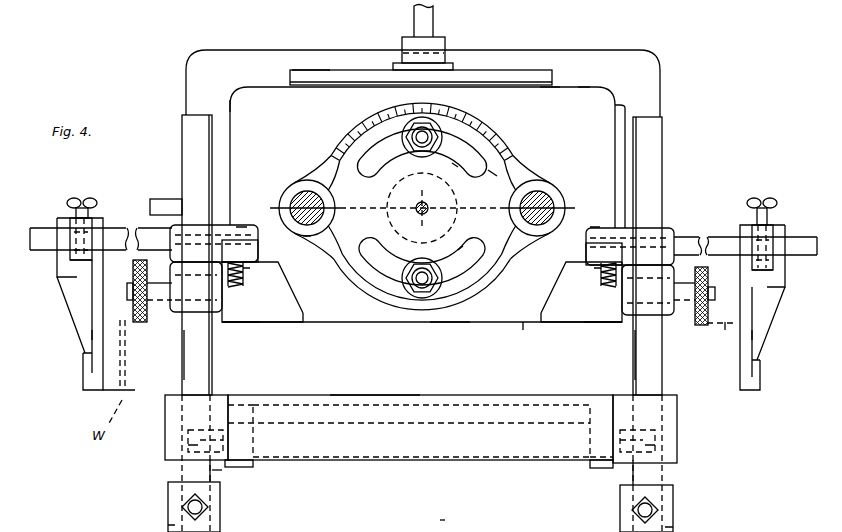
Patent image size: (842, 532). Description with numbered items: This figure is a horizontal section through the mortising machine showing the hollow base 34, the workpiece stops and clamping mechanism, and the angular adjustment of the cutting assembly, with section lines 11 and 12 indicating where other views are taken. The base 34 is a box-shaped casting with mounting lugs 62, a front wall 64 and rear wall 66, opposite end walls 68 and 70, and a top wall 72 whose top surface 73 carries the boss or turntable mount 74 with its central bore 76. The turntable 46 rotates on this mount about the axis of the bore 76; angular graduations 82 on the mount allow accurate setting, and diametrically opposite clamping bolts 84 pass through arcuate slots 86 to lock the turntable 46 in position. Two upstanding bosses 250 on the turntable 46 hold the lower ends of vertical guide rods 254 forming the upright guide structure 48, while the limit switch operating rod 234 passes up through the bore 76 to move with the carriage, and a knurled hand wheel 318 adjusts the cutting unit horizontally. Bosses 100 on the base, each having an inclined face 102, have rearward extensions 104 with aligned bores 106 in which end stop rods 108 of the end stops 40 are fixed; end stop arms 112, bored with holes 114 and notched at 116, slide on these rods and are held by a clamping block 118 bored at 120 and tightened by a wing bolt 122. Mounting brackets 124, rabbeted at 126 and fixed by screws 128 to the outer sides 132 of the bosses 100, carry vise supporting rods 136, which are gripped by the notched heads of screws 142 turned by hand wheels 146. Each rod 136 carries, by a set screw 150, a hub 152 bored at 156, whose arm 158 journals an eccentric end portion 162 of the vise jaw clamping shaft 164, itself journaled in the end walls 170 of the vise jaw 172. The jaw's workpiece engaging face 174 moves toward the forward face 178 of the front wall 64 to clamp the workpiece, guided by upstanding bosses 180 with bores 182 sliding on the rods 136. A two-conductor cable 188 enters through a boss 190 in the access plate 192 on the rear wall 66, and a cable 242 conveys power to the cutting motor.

The section line 11- 11 is at (247, 227).
The section line 12- 12 is at (523, 295).
The hollow base 34 is at (580, 82).
The workpiece end stops 40 is at (67, 344).
The turntable 46 is at (496, 176).
The upright guide structure 48 is at (307, 228).
The mounting flanges or lugs 62 is at (650, 57).
The front wall 64 is at (378, 323).
The rear wall 66 is at (292, 70).
The end wall 68 is at (230, 104).
The end wall 70 is at (626, 112).
The top wall 72 is at (530, 87).
The top surface 73 is at (553, 88).
The boss or turntable mount 74 is at (345, 156).
The central bore 76 is at (388, 212).
The angular graduations 82 is at (349, 129).
The clamping bolts 84 is at (399, 162).
The arcuate slots 86 is at (453, 165).
The bosses 100 is at (265, 323).
The inclined face of support block 102 is at (297, 300).
The rearward extensions 104 is at (258, 244).
The aligned bores 106 is at (240, 226).
The end stop rods 108 is at (117, 232).
The end stop arms 112 is at (63, 277).
The aligned holes 114 is at (62, 262).
The notch 116 is at (72, 293).
The clamping block 118 is at (96, 218).
The bore 120 is at (70, 218).
The wing bolt 122 is at (84, 200).
The mounting brackets 124 is at (422, 355).
The rabbet 126 is at (230, 284).
The screws 128 is at (248, 275).
The outer side 132 is at (234, 323).
The clamping vise supporting rods 136 is at (185, 161).
The screws 142 is at (130, 292).
The thumb screws or hand wheels 146 is at (133, 305).
The set screw 150 is at (208, 507).
The hub 152 is at (168, 500).
The bore 156 is at (170, 523).
The arm 158 is at (218, 476).
The eccentric end portions 162 is at (188, 455).
The vise jaw clamping shaft 164 is at (398, 412).
The end walls 170 is at (247, 470).
The workpiece clamping vise jaw 172 is at (469, 405).
The workpiece engaging face 174 is at (372, 400).
The forward face 178 is at (445, 323).
The upstanding bosses 180 is at (188, 443).
The parallel bores 182 is at (165, 419).
The flexible two-conductor cable 188 is at (413, 25).
The boss 190 is at (446, 40).
The access plate 192 is at (342, 70).
The limit switch operating rod 234 is at (422, 215).
The cable 242 is at (160, 199).
The upstanding bosses 250 is at (300, 183).
The vertical guide rods 254 is at (318, 206).
The knurled hand wheel 318 is at (454, 522).